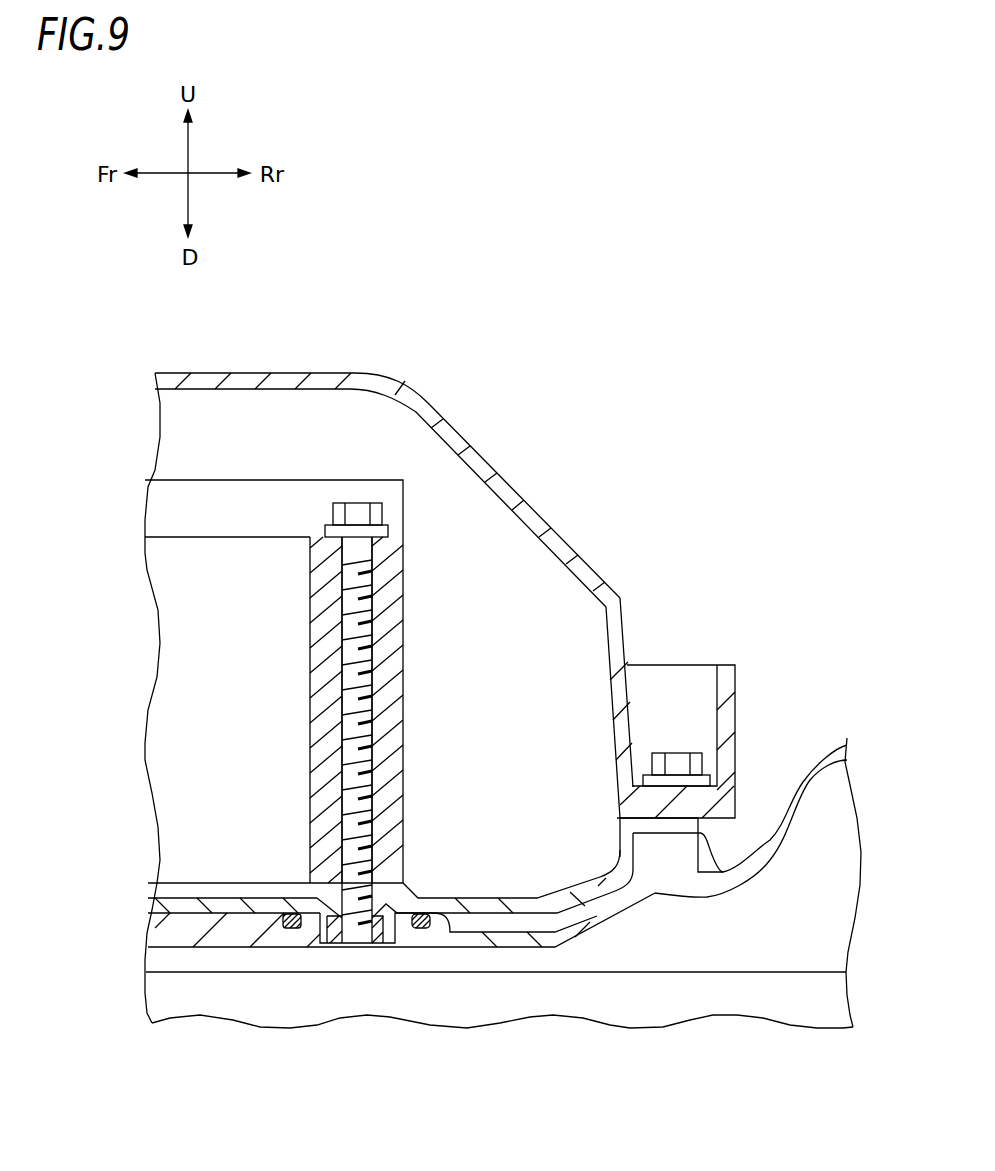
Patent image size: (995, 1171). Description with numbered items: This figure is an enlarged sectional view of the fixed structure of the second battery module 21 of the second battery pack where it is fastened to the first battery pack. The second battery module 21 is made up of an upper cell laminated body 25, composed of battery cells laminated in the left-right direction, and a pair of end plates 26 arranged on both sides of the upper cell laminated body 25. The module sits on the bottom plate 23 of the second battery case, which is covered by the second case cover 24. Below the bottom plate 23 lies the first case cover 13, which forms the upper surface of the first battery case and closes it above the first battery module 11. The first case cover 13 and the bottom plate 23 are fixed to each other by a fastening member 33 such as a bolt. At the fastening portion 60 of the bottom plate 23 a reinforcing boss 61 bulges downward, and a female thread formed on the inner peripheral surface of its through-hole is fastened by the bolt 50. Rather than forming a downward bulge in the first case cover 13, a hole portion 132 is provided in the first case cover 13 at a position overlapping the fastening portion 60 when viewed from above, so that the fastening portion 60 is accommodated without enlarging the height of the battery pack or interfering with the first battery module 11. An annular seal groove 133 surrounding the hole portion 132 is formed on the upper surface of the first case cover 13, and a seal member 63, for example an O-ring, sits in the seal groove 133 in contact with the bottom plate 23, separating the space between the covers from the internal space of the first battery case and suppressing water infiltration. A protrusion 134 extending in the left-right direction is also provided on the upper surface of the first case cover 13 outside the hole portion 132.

The first battery module 11 is at (772, 995).
The first case cover 13 is at (178, 947).
The second battery module 21 is at (280, 478).
The bottom plate 23 is at (483, 905).
The second case cover 24 is at (493, 478).
The upper cell laminated body 25 is at (245, 500).
The end plate 26 is at (222, 590).
The fastening member 33 is at (678, 760).
The bolt 50 is at (358, 510).
The fastening portion 60 is at (300, 879).
The boss 61 is at (335, 947).
The seal member 63 is at (290, 947).
The hole portion 132 is at (384, 947).
The seal groove 133 is at (434, 947).
The protrusion 134 is at (597, 870).